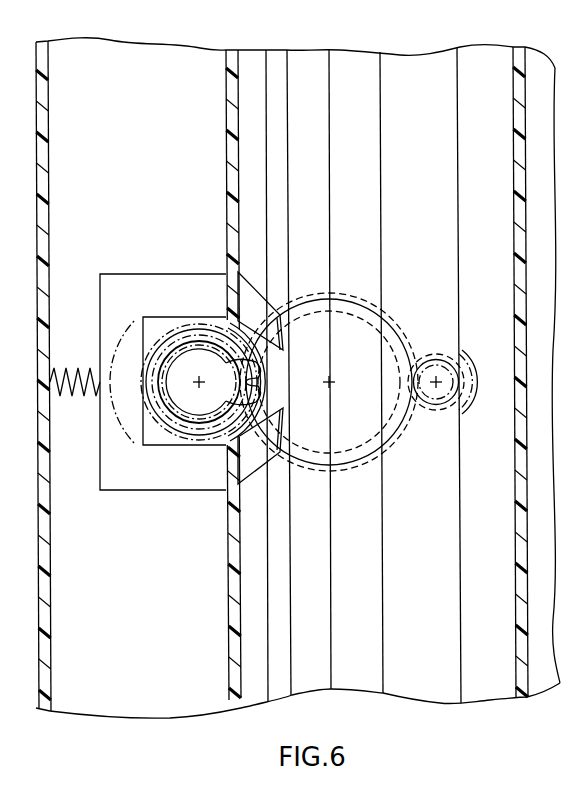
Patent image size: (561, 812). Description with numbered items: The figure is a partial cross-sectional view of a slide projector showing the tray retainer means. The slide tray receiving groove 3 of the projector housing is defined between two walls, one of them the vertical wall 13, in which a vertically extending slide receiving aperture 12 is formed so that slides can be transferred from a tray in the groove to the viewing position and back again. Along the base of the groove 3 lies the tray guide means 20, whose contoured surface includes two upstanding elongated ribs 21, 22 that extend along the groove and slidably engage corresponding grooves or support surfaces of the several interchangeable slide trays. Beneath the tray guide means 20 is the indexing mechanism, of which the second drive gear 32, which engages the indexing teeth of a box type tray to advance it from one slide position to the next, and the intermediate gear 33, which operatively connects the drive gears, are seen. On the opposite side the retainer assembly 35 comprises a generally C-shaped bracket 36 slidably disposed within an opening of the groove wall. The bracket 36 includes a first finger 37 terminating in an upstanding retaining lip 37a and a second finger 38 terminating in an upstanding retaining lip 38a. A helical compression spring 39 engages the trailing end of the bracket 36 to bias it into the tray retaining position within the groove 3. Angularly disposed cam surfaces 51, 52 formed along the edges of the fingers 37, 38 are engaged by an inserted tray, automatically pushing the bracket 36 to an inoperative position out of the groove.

The slide tray receiving groove 3 is at (416, 76).
The slide receiving aperture 12 is at (516, 387).
The vertical wall 13 is at (513, 570).
The tray guide means 20 is at (474, 180).
The rib 21 is at (452, 527).
The rib 22 is at (319, 602).
The second drive gear 32 is at (463, 352).
The intermediate gear 33 is at (364, 465).
The retainer assembly 35 is at (136, 262).
The C-shaped bracket 36 is at (123, 490).
The first finger 37 is at (284, 312).
The retaining lip 37a is at (290, 352).
The second finger 38 is at (283, 453).
The retaining lip 38a is at (288, 427).
The helical compression spring 39 is at (75, 395).
The cam surface 51 is at (248, 268).
The cam surface 52 is at (247, 488).